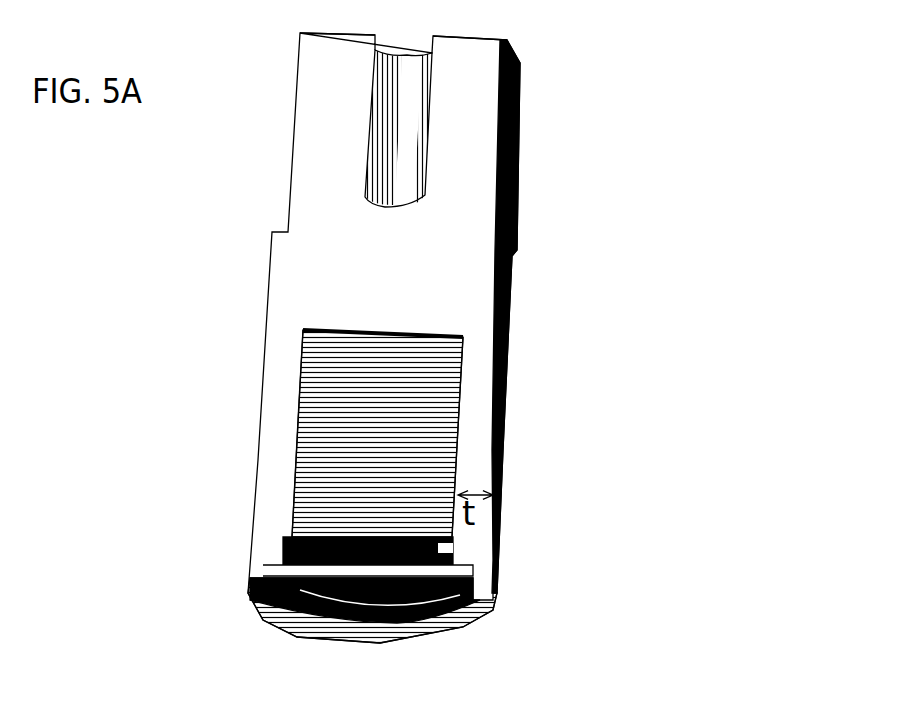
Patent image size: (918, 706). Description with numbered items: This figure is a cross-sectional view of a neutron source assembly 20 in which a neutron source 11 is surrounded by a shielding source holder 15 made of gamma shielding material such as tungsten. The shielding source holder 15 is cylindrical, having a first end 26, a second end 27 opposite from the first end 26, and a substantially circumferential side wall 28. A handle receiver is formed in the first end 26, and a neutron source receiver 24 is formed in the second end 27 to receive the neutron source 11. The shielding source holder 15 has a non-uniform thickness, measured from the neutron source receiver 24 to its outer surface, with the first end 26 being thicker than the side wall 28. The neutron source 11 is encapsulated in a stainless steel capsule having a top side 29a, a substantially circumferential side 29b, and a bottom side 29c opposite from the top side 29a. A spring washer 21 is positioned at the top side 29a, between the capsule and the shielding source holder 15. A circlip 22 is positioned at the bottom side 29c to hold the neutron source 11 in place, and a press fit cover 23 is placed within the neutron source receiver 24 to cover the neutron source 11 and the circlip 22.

The neutron source assembly 20 is at (590, 46).
The first end 26 is at (548, 102).
The shielding source holder 15 is at (471, 226).
The spring washer 21 is at (425, 331).
The neutron source receiver 24 is at (465, 352).
The top side 29a is at (320, 333).
The substantially circumferential side 29b is at (297, 425).
The bottom side 29c is at (317, 532).
The neutron source 11 is at (410, 420).
The substantially circumferential side wall 28 is at (511, 445).
The second end 27 is at (518, 572).
The circlip 22 is at (295, 542).
The press fit cover 23 is at (408, 587).